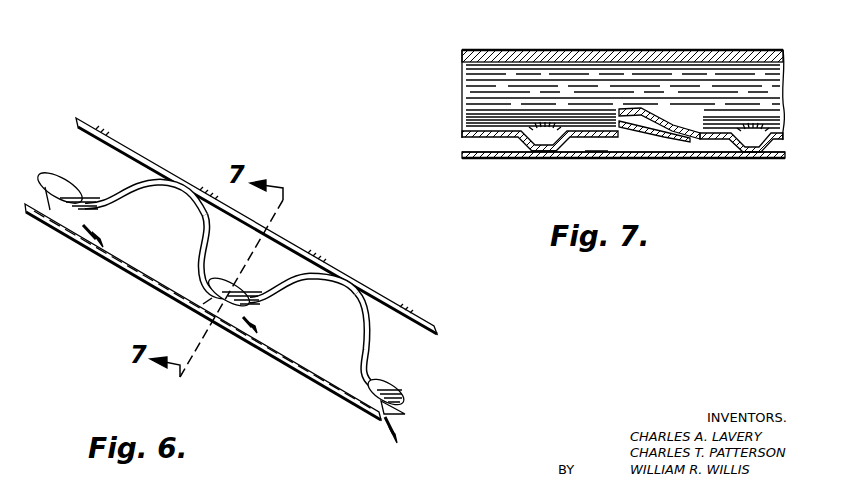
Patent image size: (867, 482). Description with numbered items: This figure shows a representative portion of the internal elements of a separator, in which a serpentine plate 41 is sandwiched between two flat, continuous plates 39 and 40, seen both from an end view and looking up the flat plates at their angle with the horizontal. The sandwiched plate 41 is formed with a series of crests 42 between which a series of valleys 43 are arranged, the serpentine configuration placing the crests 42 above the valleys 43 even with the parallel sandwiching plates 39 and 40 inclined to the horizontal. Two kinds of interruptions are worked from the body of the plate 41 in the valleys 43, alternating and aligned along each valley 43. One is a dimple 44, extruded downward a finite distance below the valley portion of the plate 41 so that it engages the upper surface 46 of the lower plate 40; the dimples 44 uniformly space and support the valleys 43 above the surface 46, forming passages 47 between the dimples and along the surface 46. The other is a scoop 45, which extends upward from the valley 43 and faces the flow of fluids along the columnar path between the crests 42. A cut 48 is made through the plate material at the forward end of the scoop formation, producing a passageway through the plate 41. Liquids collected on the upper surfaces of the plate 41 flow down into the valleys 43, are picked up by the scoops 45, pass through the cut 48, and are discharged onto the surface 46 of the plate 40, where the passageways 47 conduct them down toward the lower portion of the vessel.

In FIG. 6, the flat plate 39 is at (99, 130).
In FIG. 7, the flat plate 39 is at (483, 50).
In FIG. 6, the flat plate 40 is at (312, 384).
In FIG. 7, the flat plate 40 is at (508, 159).
In FIG. 6, the sandwiched serpentine plate 41 is at (368, 352).
In FIG. 7, the sandwiched serpentine plate 41 is at (464, 75).
In FIG. 6, the crests 42 is at (192, 198).
In FIG. 7, the valleys 43 is at (462, 134).
In FIG. 6, the dimple 44 is at (210, 309).
In FIG. 7, the dimple 44 is at (553, 152).
In FIG. 6, the scoop 45 is at (84, 190).
In FIG. 7, the scoop 45 is at (632, 109).
In FIG. 6, the upper surface of plate 40 46 is at (275, 352).
In FIG. 7, the upper surface of plate 40 46 is at (470, 152).
In FIG. 6, the passages 47 is at (388, 413).
In FIG. 7, the passages 47 is at (597, 148).
In FIG. 7, the cut 48 is at (633, 141).